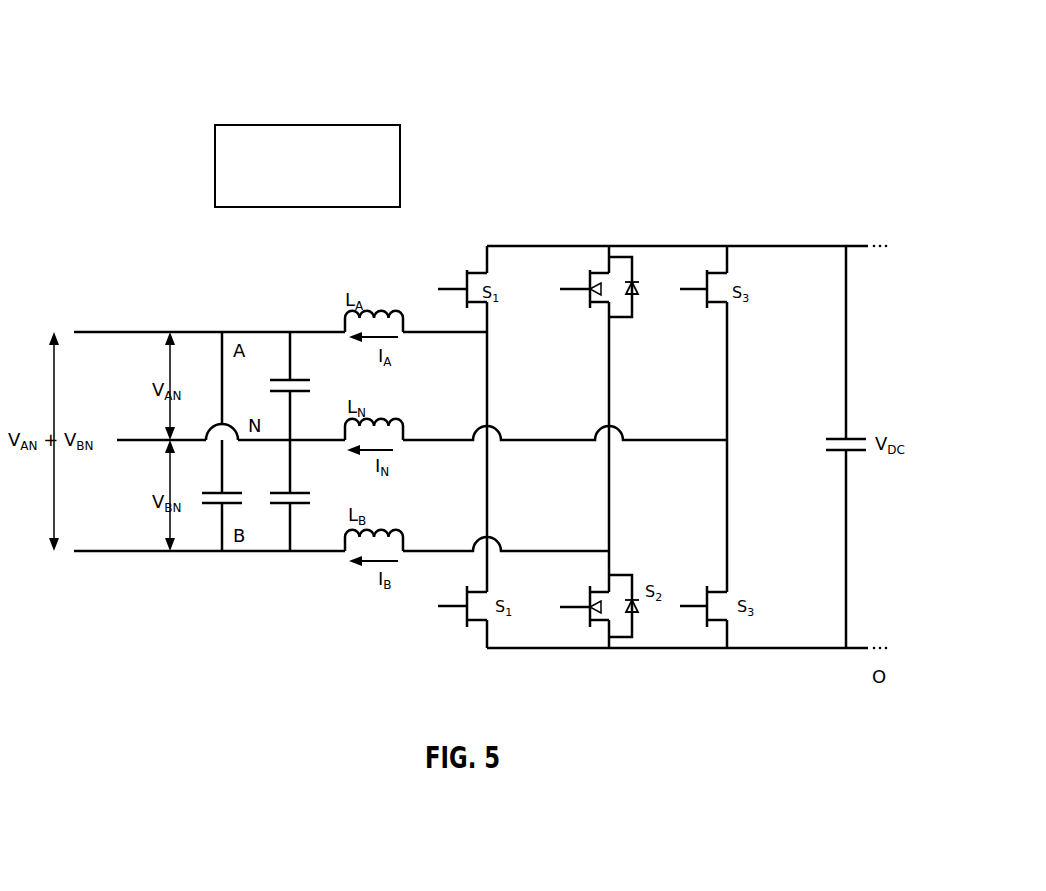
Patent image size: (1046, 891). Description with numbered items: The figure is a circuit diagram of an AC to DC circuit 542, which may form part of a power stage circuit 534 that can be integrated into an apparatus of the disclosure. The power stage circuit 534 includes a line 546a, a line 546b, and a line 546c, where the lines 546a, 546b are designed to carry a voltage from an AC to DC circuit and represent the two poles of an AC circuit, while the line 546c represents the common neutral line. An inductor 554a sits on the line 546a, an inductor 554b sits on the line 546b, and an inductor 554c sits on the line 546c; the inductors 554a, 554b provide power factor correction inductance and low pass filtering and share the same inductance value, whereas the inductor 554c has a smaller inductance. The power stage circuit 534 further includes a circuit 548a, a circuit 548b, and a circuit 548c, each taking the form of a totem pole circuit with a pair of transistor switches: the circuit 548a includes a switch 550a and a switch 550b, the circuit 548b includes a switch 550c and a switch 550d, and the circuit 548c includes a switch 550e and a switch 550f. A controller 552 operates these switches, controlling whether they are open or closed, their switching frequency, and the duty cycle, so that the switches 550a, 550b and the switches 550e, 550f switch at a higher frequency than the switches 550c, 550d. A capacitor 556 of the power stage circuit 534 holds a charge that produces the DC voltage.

The power stage circuit 534 is at (89, 90).
The AC to DC circuit 542 is at (834, 196).
The line 546a is at (250, 330).
The line 546b is at (250, 553).
The line 546c is at (330, 442).
The circuit 548a is at (488, 356).
The circuit 548b is at (609, 343).
The circuit 548c is at (727, 508).
The switch 550a is at (467, 268).
The switch 550b is at (465, 622).
The switch 550c is at (590, 268).
The switch 550d is at (588, 622).
The switch 550e is at (707, 268).
The switch 550f is at (706, 622).
The controller 552 is at (291, 192).
The inductor 554a is at (392, 316).
The inductor 554b is at (407, 540).
The inductor 554c is at (401, 425).
The capacitor 556 is at (858, 432).